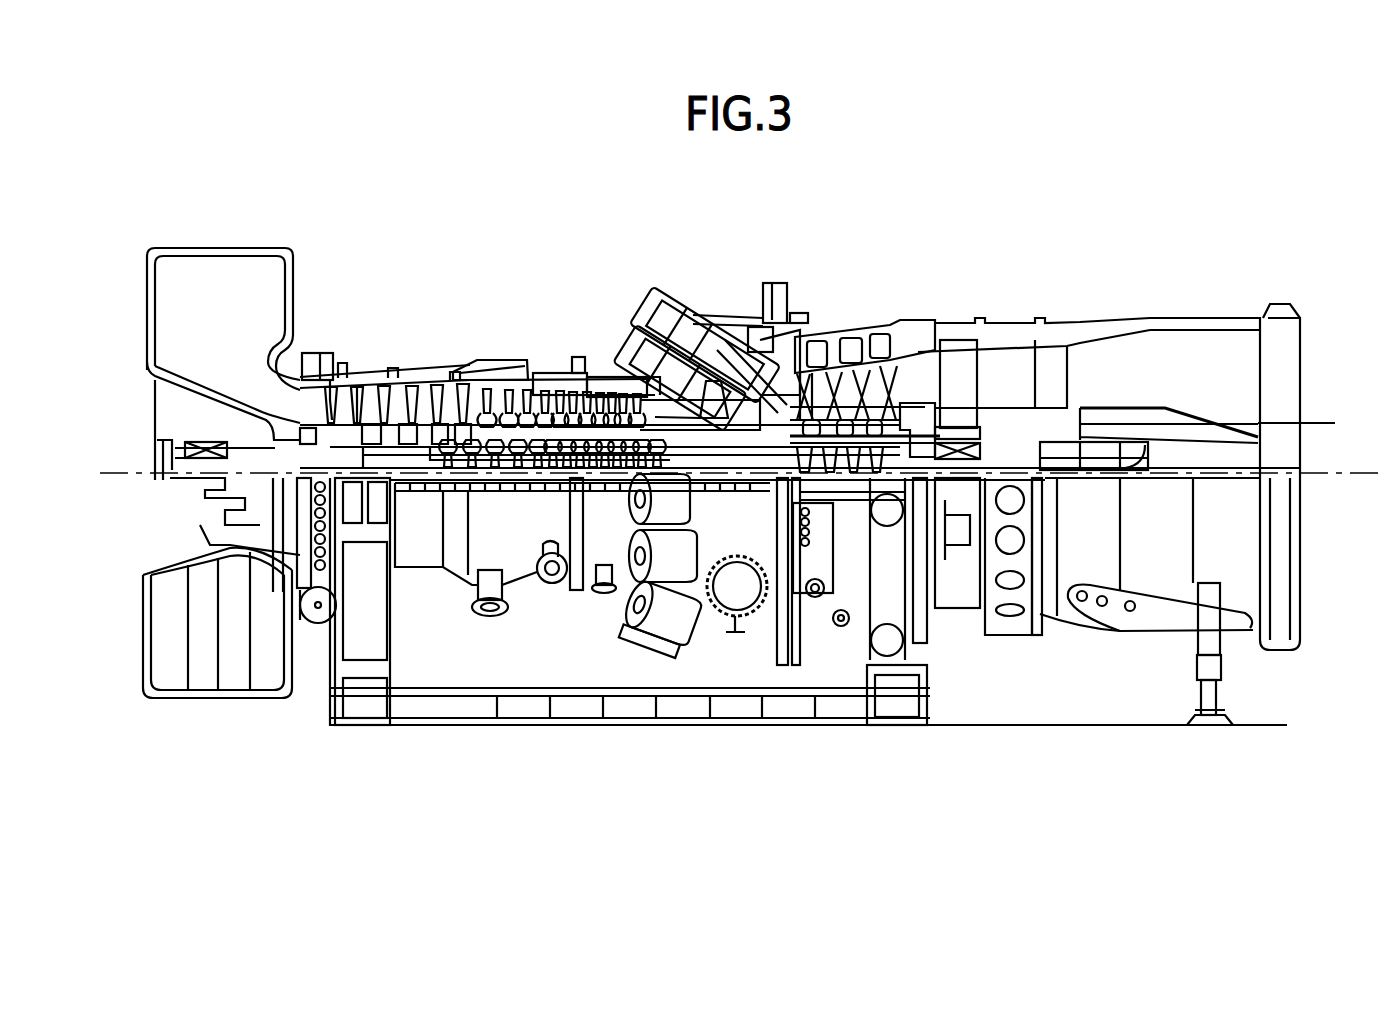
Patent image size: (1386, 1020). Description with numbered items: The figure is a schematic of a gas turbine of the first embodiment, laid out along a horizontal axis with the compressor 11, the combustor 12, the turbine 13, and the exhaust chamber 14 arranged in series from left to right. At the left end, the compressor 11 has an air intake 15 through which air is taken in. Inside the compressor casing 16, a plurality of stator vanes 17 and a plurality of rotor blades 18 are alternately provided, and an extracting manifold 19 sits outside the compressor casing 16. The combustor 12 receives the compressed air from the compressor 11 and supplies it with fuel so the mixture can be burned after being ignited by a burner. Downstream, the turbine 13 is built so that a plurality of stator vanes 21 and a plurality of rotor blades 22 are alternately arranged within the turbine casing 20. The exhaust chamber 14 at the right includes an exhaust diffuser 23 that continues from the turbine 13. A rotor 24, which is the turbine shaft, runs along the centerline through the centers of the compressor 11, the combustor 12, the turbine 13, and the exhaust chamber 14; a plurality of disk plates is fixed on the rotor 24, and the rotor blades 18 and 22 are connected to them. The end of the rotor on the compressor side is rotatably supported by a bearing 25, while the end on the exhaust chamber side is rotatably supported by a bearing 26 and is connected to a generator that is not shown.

The compressor 11 is at (372, 320).
The combustor 12 is at (665, 284).
The turbine 13 is at (936, 302).
The exhaust chamber 14 is at (1153, 308).
The air intake 15 is at (162, 313).
The compressor casing 16 is at (338, 392).
The stator vanes 17 is at (375, 392).
The rotor blades 18 is at (432, 388).
The extracting manifold 19 is at (494, 374).
The turbine casing 20 is at (862, 328).
The stator vanes 21 is at (826, 330).
The rotor blades 22 is at (768, 300).
The exhaust diffuser 23 is at (1020, 370).
The rotor 24 is at (692, 452).
The bearing 25 is at (165, 447).
The bearing 26 is at (1335, 423).